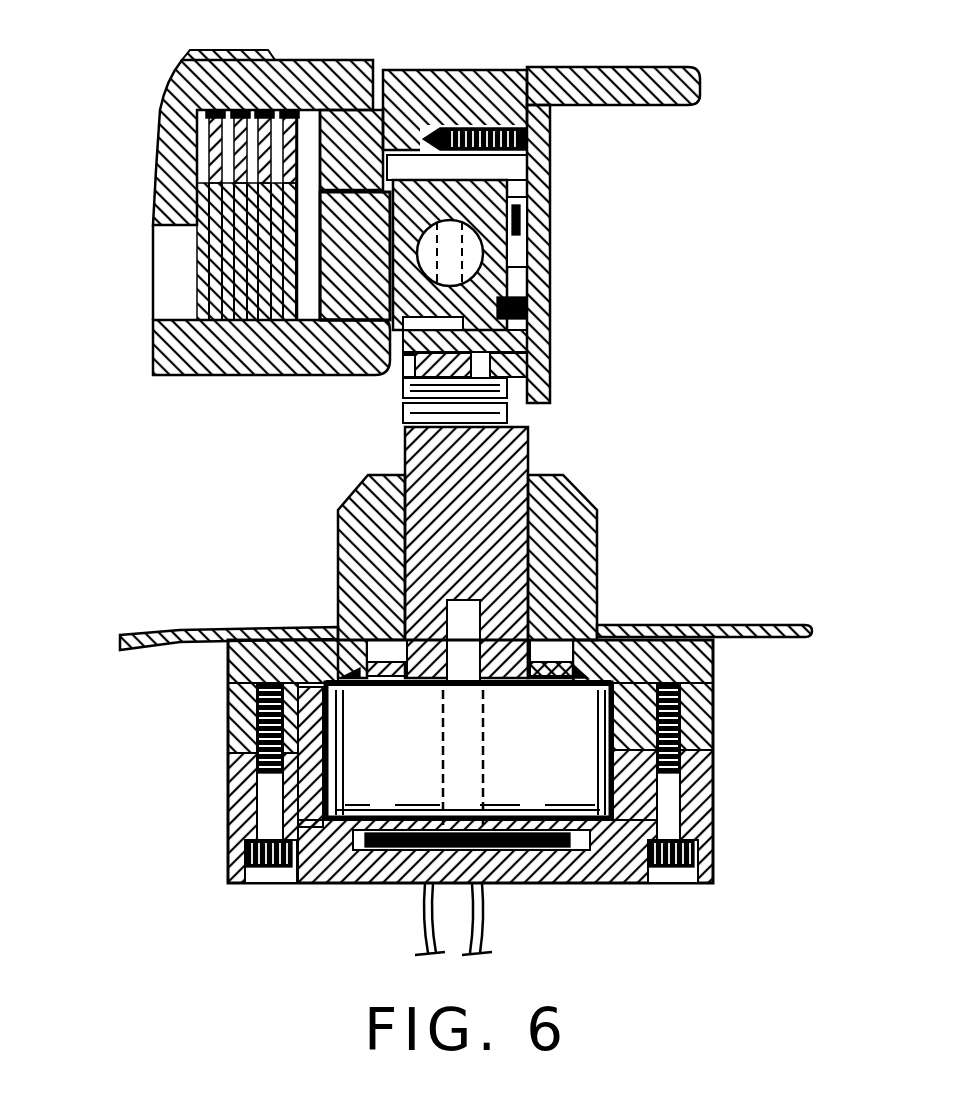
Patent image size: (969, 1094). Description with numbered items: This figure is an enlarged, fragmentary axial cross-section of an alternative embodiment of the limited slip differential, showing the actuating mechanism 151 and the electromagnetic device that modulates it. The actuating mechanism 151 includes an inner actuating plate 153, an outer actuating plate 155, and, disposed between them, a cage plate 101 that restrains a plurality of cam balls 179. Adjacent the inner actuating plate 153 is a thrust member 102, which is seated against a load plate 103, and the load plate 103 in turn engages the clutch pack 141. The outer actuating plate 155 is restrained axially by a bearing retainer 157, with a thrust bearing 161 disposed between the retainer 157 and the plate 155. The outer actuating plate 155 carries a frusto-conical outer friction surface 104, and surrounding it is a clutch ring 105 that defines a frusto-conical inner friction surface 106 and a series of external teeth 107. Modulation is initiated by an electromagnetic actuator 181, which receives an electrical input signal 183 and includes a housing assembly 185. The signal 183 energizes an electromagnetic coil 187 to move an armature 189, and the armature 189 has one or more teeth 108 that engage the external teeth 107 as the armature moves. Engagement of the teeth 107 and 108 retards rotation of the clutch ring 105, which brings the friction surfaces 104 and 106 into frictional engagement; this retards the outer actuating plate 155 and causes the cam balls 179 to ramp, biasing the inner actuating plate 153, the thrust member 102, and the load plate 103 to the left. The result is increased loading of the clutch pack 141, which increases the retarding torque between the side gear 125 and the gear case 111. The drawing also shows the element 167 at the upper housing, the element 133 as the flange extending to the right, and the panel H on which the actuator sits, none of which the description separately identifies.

The side gear 125 is at (182, 78).
The retainer block 167 is at (345, 145).
The inner actuating plate 153 is at (412, 205).
The cage plate 101 is at (455, 178).
The outer actuating plate 155 is at (490, 135).
The bearing retainer 157 is at (550, 190).
The mounting flange 133 is at (652, 92).
The thrust bearing 161 is at (547, 225).
The actuating mechanism 151 is at (628, 234).
The cam balls 179 is at (400, 250).
The clutch pack 141 is at (165, 292).
The gear case 111 is at (178, 340).
The load plate 103 is at (300, 320).
The thrust member 102 is at (340, 327).
The frusto-conical inner friction surface 106 is at (405, 360).
The external teeth 107 is at (432, 395).
The teeth 108 is at (486, 427).
The frusto-conical outer friction surface 104 is at (547, 375).
The clutch ring 105 is at (500, 400).
The electromagnetic actuator 181 is at (694, 562).
The armature 189 is at (420, 572).
The housing panel H is at (170, 626).
The housing assembly 185 is at (715, 672).
The electromagnetic coil 187 is at (468, 756).
The electrical input signal 183 is at (425, 908).